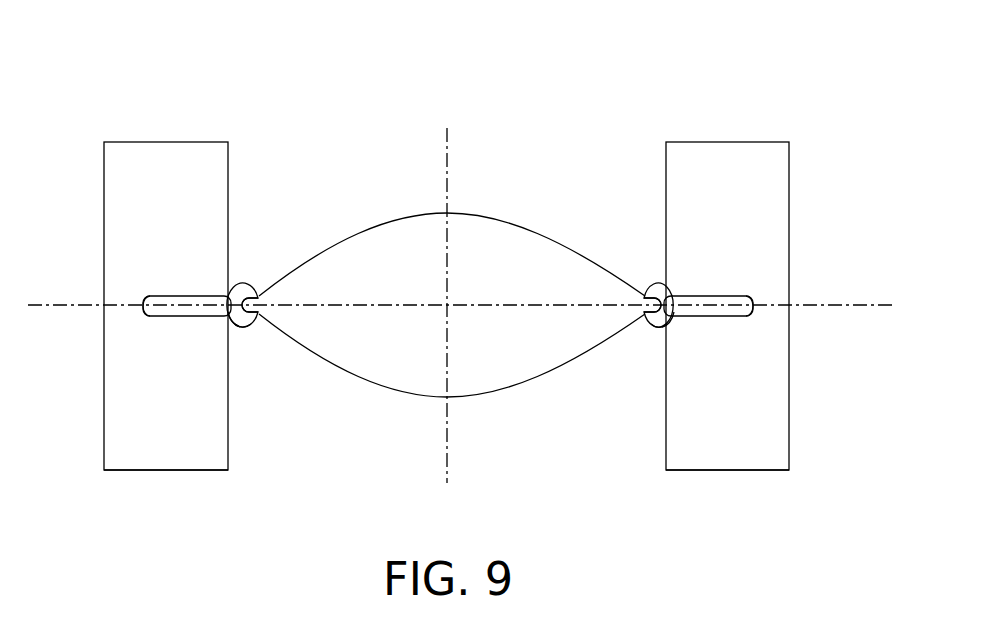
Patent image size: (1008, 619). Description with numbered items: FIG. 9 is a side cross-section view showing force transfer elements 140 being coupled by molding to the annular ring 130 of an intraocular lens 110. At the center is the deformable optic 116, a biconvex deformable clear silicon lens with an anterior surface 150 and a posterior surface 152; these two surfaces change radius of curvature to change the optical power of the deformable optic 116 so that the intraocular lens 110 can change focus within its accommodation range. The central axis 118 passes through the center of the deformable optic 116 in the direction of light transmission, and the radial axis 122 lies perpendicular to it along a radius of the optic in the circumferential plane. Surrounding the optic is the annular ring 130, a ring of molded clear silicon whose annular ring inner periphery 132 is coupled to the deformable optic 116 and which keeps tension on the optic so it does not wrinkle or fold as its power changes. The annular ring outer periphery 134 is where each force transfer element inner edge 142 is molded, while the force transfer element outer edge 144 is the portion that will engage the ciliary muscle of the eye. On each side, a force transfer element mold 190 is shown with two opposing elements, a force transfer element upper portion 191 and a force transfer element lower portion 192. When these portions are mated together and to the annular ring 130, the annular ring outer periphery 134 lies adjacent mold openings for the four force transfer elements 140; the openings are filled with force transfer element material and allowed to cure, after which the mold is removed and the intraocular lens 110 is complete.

The intraocular lens 110 is at (447, 96).
The deformable optic 116 is at (535, 250).
The central axis 118 is at (447, 160).
The radial axis 122 is at (876, 303).
The annular ring 130 is at (246, 320).
The annular ring inner periphery 132 is at (258, 293).
The annular ring outer periphery 134 is at (233, 326).
The force transfer element 140 is at (197, 297).
The force transfer element inner edge 142 is at (228, 293).
The force transfer element outer edge 144 is at (143, 305).
The anterior surface 150 is at (378, 228).
The posterior surface 152 is at (378, 385).
The force transfer element mold 190 is at (781, 95).
The force transfer element upper portion 191 is at (119, 150).
The force transfer element lower portion 192 is at (120, 462).